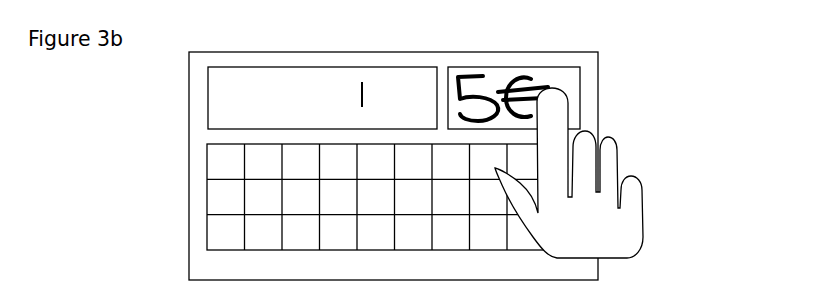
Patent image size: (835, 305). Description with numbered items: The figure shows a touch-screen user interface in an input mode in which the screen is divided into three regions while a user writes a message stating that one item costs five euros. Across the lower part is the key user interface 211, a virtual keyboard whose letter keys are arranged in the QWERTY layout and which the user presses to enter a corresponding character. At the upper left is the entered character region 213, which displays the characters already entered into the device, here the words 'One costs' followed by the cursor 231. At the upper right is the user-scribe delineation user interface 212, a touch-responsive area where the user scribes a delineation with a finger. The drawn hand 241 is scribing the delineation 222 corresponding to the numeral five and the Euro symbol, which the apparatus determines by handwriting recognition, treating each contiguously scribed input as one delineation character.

The key user interface 211 is at (218, 169).
The user-scribe delineation user interface 212 is at (572, 83).
The entered character region 213 is at (218, 112).
The handwritten input characters 222 is at (530, 72).
The text cursor 231 is at (352, 82).
The user hand / finger 241 is at (565, 113).